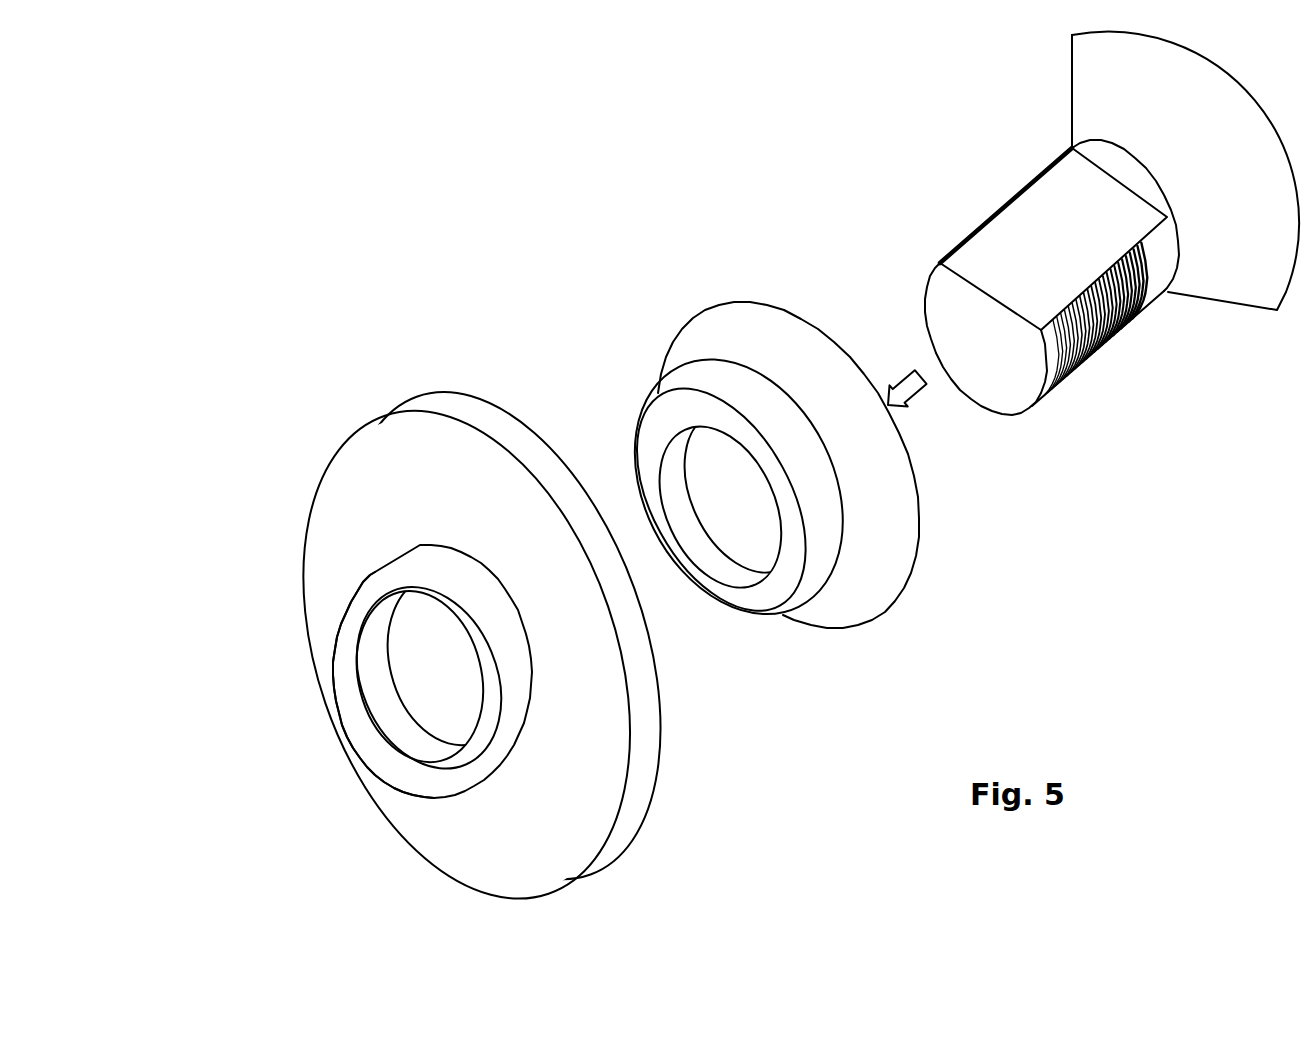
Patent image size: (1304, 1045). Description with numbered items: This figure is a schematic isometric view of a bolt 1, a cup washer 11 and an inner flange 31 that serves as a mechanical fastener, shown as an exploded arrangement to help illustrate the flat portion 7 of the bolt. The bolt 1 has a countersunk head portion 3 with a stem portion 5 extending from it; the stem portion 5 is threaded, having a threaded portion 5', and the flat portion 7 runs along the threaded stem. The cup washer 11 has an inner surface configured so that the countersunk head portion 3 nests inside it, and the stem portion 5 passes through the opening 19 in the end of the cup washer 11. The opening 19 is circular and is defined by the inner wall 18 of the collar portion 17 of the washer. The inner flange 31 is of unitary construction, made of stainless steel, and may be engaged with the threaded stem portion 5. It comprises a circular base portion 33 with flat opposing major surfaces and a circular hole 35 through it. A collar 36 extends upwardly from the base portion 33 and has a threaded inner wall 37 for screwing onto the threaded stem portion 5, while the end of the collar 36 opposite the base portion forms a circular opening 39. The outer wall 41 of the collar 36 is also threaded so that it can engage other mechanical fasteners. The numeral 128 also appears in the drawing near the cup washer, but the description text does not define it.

The bolt 1 is at (963, 196).
The countersunk head portion 3 is at (1087, 108).
The stem portion 5 is at (1077, 339).
The threaded portion 5' is at (1112, 339).
The flat portion 7 is at (1052, 228).
The cup washer 11 is at (850, 673).
The collar portion 17 is at (690, 377).
The inner wall 18 is at (673, 472).
The opening 19 is at (735, 507).
The ring flange 128 is at (816, 471).
The inner flange 31 is at (362, 383).
The circular base portion 33 is at (352, 461).
The circular hole 35 is at (397, 707).
The collar 36 is at (367, 580).
The threaded inner wall 37 is at (382, 707).
The circular opening 39 is at (326, 655).
The outer wall 41 is at (512, 698).